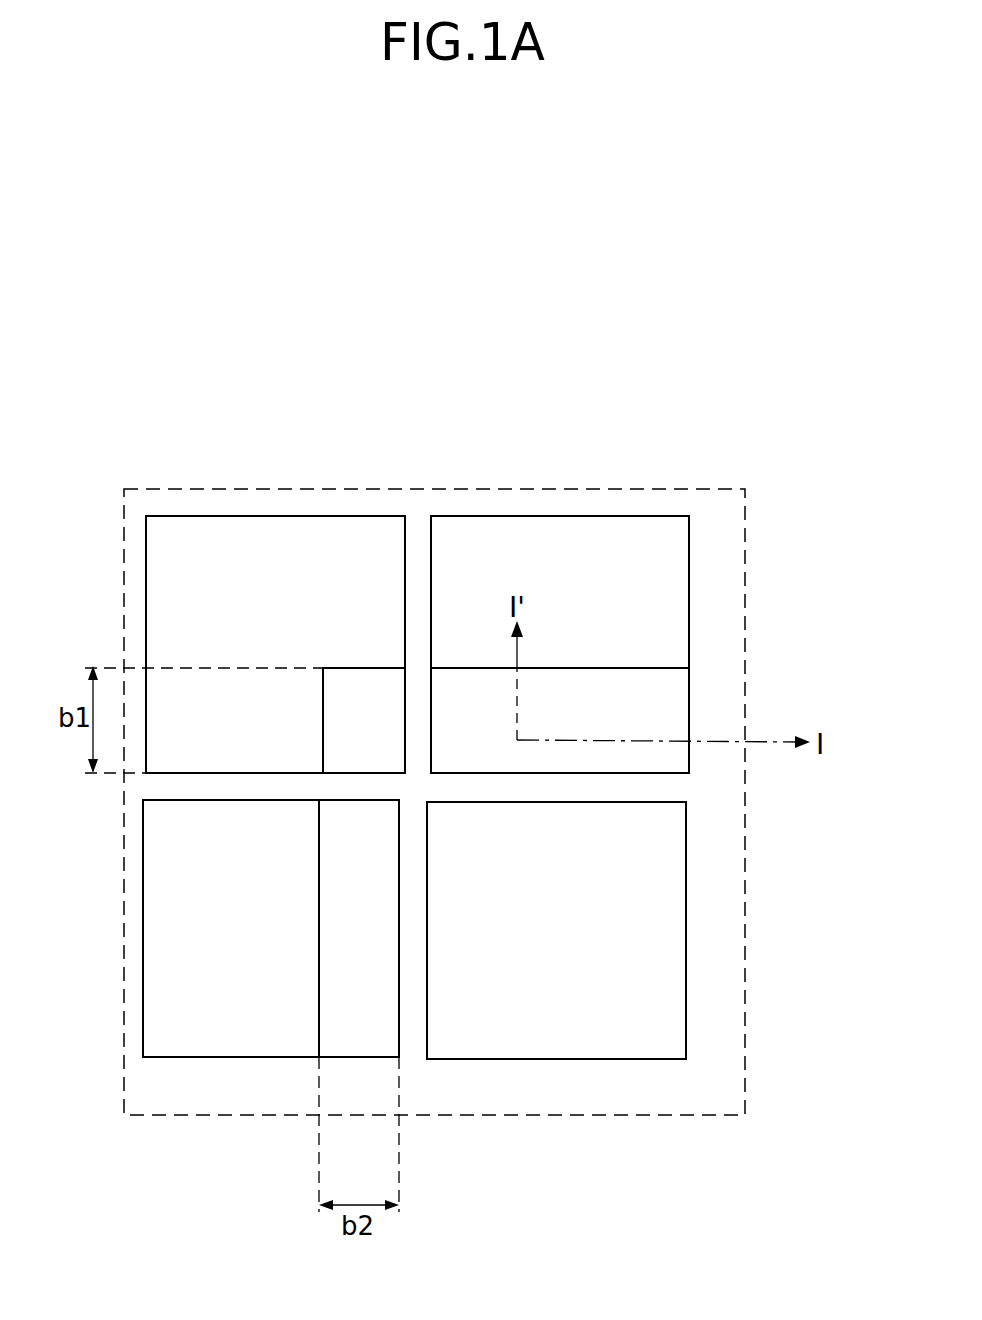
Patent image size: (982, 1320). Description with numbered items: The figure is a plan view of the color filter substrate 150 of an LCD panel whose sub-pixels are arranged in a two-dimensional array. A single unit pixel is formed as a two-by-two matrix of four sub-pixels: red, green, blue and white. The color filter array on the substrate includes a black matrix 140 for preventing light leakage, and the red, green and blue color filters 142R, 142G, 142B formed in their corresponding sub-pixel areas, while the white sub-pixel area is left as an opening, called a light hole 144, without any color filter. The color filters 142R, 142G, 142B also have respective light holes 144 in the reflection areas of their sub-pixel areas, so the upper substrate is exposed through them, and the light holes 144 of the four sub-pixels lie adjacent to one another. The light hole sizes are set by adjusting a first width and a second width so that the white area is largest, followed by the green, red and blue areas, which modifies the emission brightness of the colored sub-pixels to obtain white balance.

The black matrix 140 is at (745, 807).
The color filter substrate 150 is at (786, 638).
The blue color filter 142B is at (276, 516).
The green color filter 142G is at (560, 516).
The red color filter 142R is at (219, 1057).
The light hole 144 is at (370, 668).